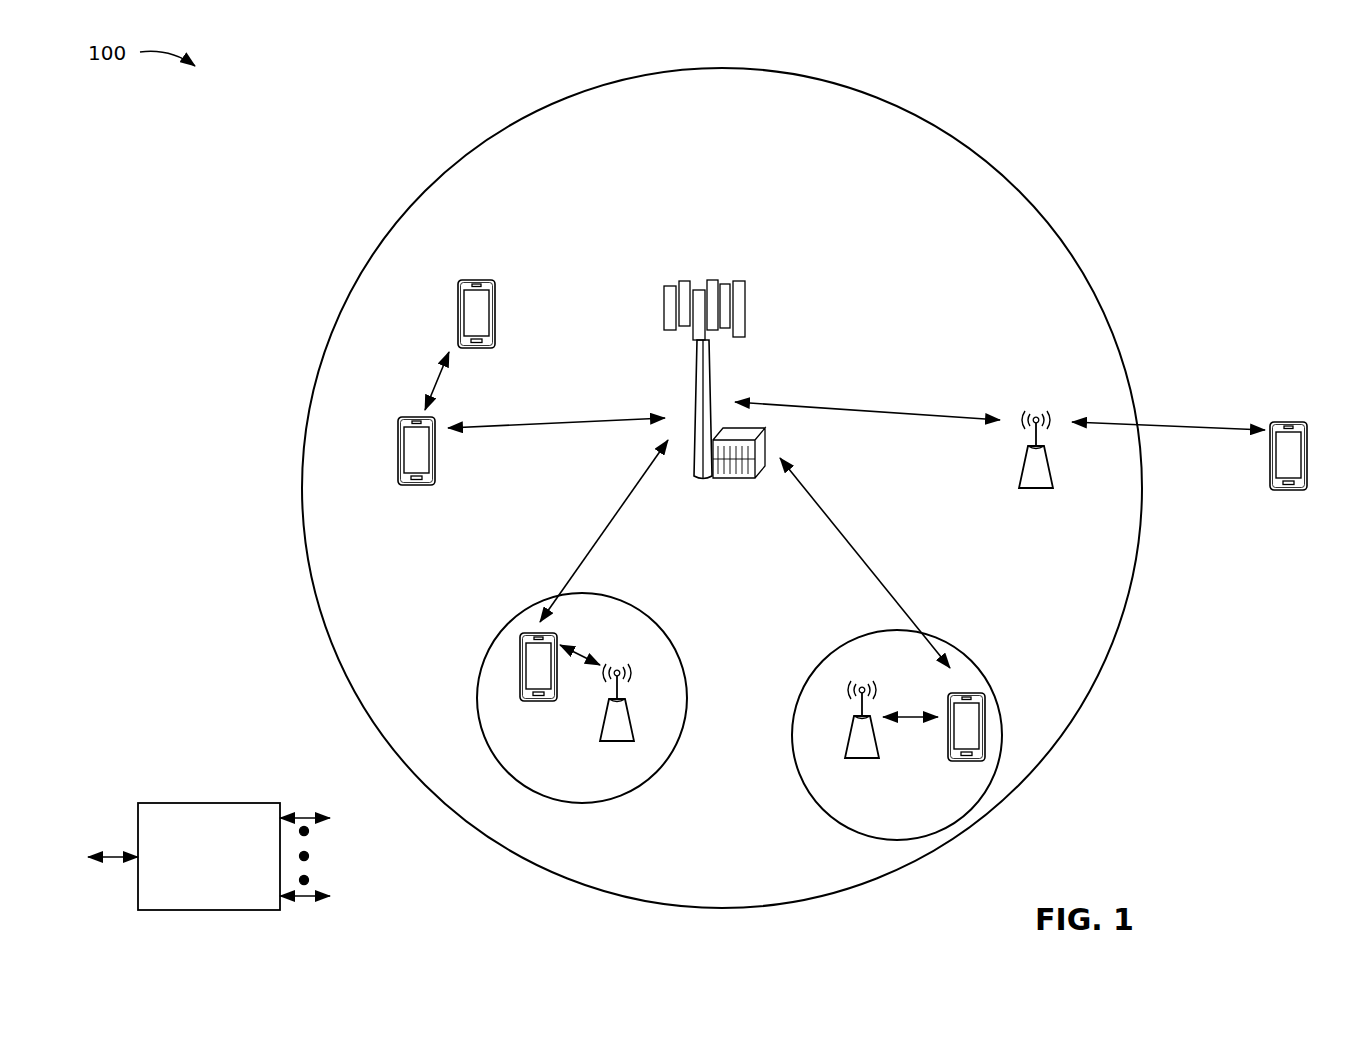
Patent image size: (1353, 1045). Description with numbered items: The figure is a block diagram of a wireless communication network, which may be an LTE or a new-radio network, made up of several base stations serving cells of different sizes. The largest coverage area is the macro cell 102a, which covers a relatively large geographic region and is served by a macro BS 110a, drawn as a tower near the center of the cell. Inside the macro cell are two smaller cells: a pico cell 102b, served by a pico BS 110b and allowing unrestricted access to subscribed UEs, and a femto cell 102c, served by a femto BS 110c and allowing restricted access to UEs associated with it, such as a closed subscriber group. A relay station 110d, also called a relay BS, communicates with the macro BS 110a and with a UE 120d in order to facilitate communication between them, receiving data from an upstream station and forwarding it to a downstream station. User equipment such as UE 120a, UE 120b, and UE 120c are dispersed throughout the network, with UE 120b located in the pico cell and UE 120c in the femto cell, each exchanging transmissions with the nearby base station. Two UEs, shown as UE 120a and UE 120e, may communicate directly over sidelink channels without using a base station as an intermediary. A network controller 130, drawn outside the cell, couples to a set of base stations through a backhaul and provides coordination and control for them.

The macro cell 102a is at (998, 173).
The pico cell 102b is at (676, 632).
The femto cell 102c is at (823, 641).
The macro BS 110a is at (708, 272).
The pico BS 110b is at (635, 729).
The femto BS 110c is at (849, 744).
The relay station 110d is at (1036, 410).
The UE 120a is at (398, 443).
The UE 120b is at (530, 701).
The UE 120c is at (952, 762).
The UE 120d is at (1300, 420).
The UE 120e is at (458, 301).
The network controller 130 is at (203, 803).